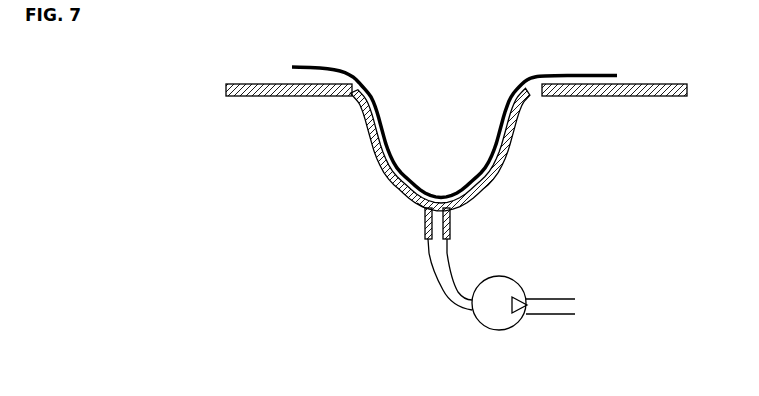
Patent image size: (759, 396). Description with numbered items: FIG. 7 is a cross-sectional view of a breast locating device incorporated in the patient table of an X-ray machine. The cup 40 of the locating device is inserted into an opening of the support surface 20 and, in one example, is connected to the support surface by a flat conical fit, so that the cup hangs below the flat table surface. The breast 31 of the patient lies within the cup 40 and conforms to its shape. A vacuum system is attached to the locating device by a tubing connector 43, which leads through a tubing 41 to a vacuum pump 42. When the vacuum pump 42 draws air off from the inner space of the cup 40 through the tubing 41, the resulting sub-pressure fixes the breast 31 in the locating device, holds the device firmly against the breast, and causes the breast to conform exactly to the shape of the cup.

The support surface 20 is at (227, 92).
The breast 31 is at (467, 157).
The cup 40 is at (406, 201).
The tubing 41 is at (438, 254).
The vacuum pump 42 is at (492, 310).
The tubing connector 43 is at (450, 227).